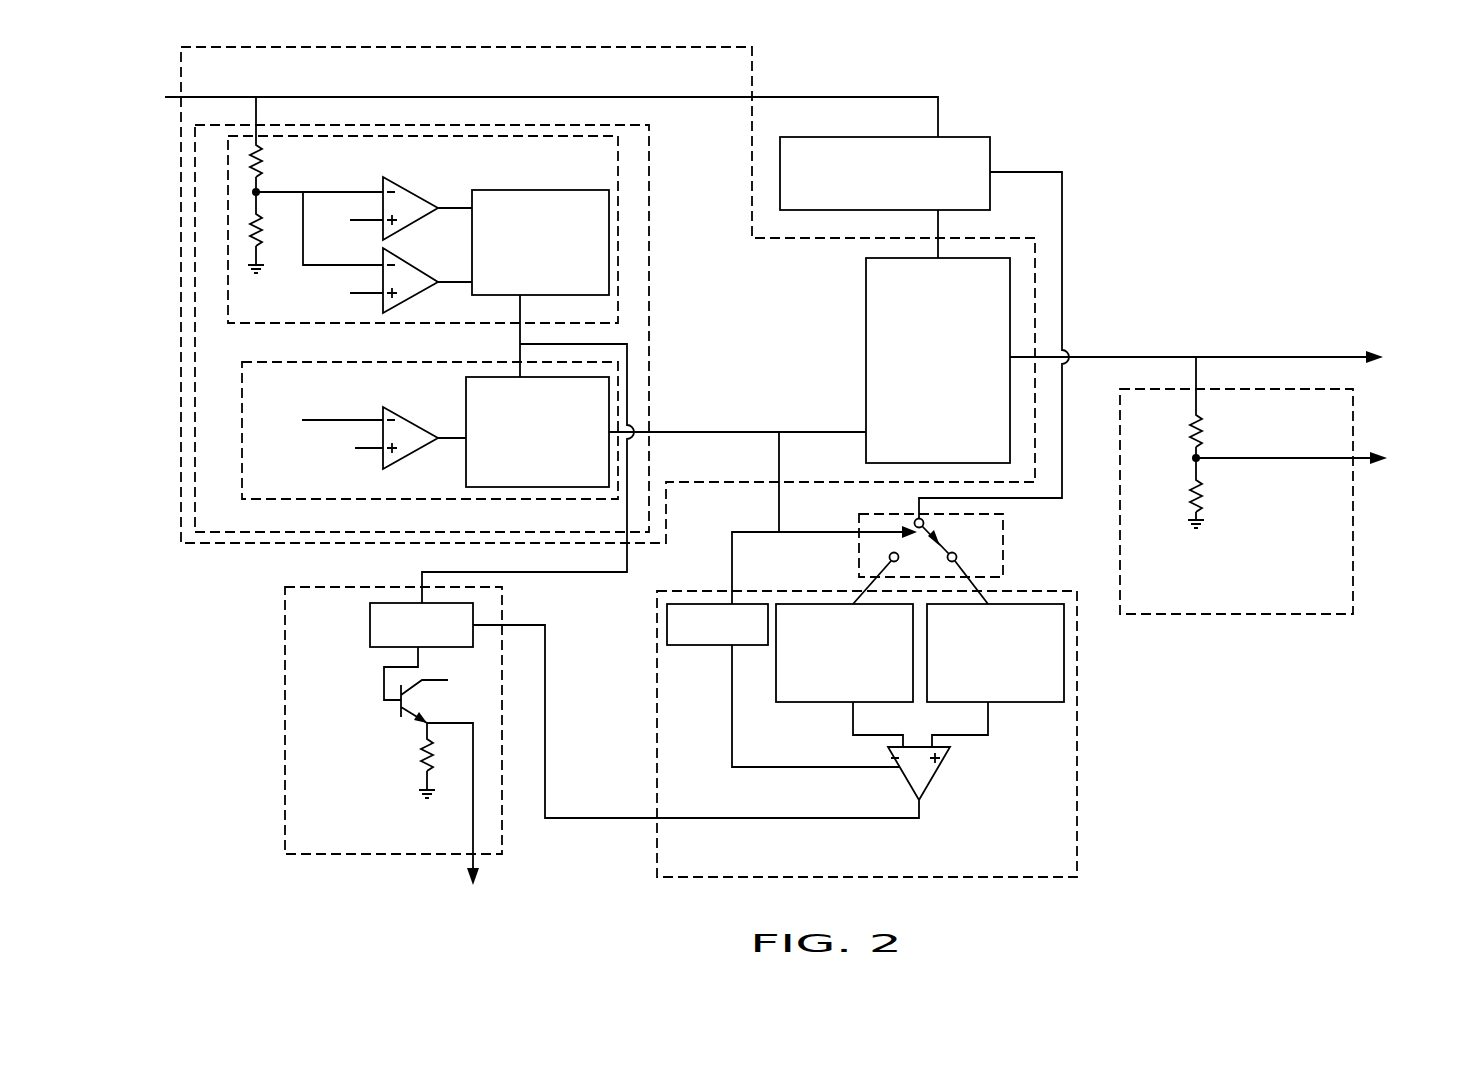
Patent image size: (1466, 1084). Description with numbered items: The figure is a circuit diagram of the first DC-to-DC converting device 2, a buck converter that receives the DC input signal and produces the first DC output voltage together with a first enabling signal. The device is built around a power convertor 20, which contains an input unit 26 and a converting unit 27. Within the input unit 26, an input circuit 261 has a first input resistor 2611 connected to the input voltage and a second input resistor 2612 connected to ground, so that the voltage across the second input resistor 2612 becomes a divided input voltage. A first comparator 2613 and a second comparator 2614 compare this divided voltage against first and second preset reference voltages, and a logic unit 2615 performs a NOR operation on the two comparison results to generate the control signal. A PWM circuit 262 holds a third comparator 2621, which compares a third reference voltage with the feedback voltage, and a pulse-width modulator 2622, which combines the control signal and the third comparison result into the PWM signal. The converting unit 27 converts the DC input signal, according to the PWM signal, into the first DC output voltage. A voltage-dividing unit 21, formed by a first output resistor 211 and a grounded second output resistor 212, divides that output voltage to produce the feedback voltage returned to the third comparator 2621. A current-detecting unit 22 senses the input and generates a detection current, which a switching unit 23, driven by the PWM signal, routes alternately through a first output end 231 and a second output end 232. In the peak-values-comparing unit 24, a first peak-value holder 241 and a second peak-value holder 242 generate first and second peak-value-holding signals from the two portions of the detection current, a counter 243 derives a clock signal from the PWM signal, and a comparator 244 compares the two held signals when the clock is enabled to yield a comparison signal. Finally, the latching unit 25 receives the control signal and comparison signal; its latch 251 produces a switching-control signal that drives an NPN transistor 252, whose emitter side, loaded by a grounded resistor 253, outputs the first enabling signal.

The first DC-to-DC converting device 2 is at (1146, 202).
The power convertor 20 is at (752, 70).
The voltage-dividing unit 21 is at (1353, 420).
The first output resistor 211 is at (1190, 418).
The second output resistor 212 is at (1200, 480).
The current-detecting unit 22 is at (968, 137).
The switching unit 23 is at (1003, 530).
The first output end 231 is at (970, 577).
The second output end 232 is at (880, 578).
The peak-values-comparing unit 24 is at (1077, 790).
The first peak-value holder 241 is at (1020, 703).
The second peak-value holder 242 is at (814, 703).
The counter 243 is at (707, 647).
The comparator 244 is at (935, 770).
The latching unit 25 is at (285, 692).
The latch 251 is at (370, 624).
The transistor 252 is at (398, 706).
The resistor 253 is at (425, 757).
The input unit 26 is at (649, 165).
The input circuit 261 is at (609, 242).
The first input resistor 2611 is at (262, 148).
The second input resistor 2612 is at (262, 232).
The first comparator 2613 is at (425, 155).
The second comparator 2614 is at (420, 244).
The logic unit 2615 is at (490, 190).
The PWM circuit 262 is at (305, 360).
The third comparator 2621 is at (400, 408).
The pulse-width modulator 2622 is at (466, 405).
The converting unit 27 is at (866, 343).